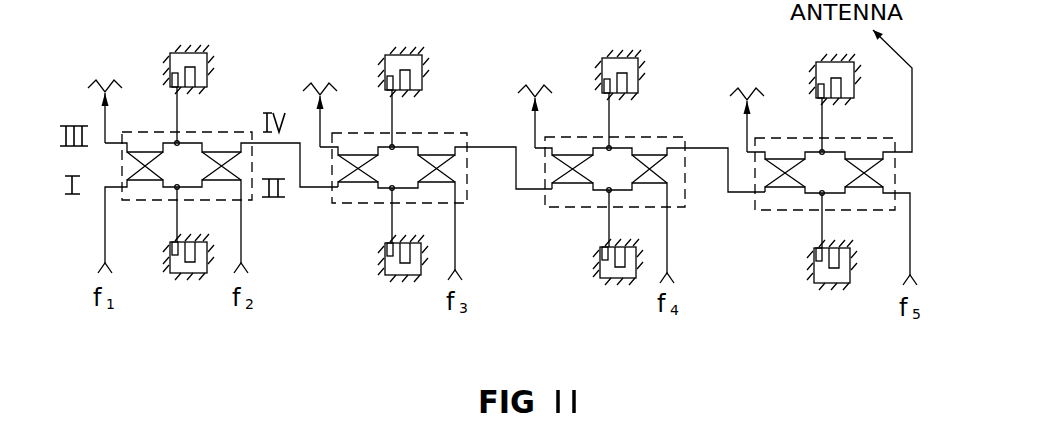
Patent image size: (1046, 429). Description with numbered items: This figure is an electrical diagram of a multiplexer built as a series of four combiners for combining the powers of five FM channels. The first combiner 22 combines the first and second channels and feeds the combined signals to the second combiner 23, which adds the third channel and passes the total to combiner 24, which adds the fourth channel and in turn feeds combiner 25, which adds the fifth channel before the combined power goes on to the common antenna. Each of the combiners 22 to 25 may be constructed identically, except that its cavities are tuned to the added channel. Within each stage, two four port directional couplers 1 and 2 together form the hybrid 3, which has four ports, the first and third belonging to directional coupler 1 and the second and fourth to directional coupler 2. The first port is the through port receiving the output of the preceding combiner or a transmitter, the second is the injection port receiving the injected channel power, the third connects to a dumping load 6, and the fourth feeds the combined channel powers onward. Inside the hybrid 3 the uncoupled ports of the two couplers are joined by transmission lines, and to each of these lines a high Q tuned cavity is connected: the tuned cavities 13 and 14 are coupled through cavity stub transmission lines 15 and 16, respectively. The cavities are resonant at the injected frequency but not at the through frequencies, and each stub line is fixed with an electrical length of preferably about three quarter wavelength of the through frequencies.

The four port directional coupler 1 is at (133, 139).
The four port directional coupler 2 is at (223, 140).
The hybrid 3 is at (188, 132).
The dumping load 6 is at (96, 84).
The tuned cavity 13 is at (211, 52).
The tuned cavity 14 is at (184, 272).
The cavity stub transmission line 15 is at (177, 107).
The cavity stub transmission line 16 is at (177, 216).
The first combiner 22 is at (131, 57).
The second combiner 23 is at (347, 69).
The combiner 24 is at (564, 71).
The combiner 25 is at (775, 79).